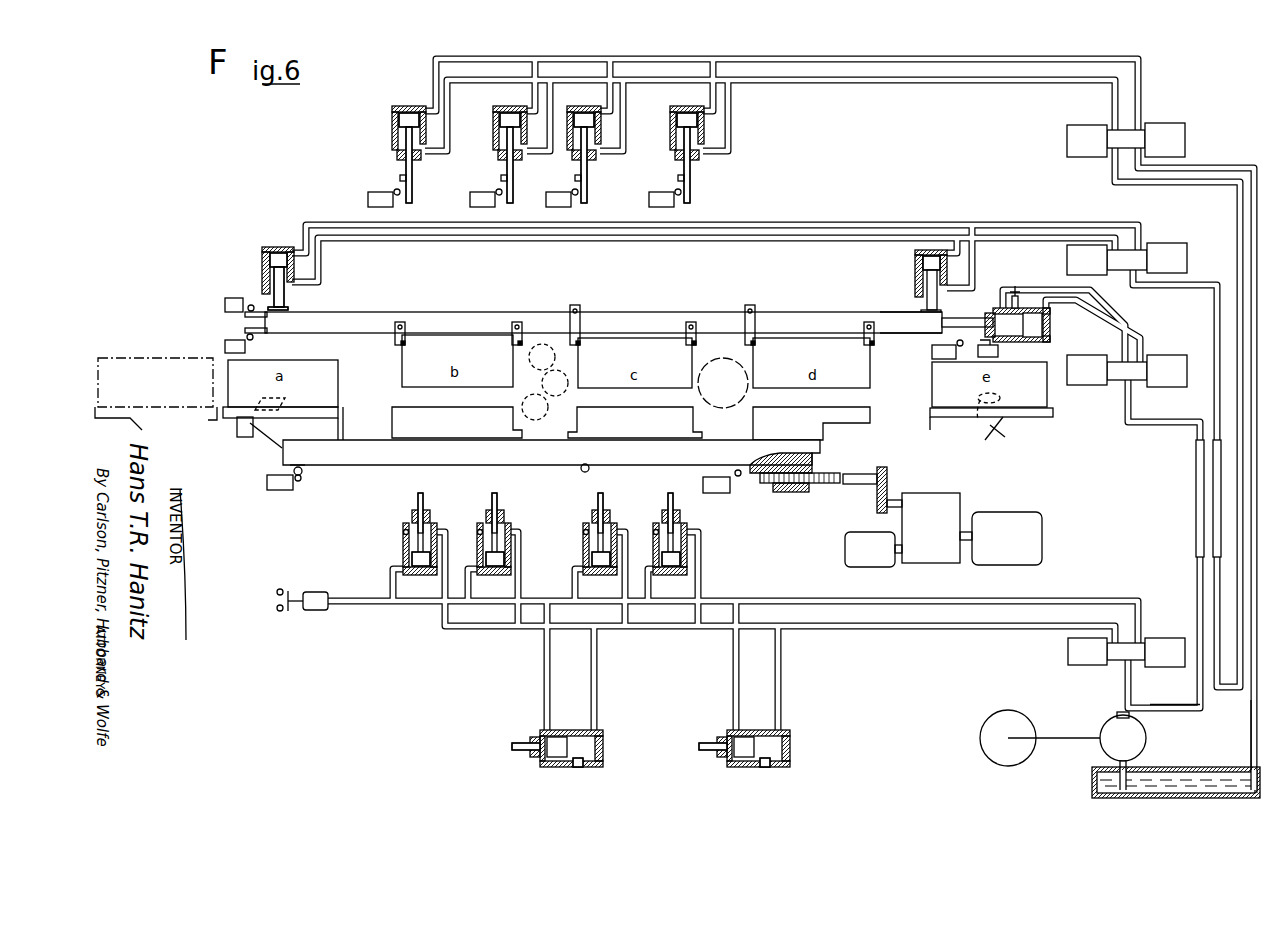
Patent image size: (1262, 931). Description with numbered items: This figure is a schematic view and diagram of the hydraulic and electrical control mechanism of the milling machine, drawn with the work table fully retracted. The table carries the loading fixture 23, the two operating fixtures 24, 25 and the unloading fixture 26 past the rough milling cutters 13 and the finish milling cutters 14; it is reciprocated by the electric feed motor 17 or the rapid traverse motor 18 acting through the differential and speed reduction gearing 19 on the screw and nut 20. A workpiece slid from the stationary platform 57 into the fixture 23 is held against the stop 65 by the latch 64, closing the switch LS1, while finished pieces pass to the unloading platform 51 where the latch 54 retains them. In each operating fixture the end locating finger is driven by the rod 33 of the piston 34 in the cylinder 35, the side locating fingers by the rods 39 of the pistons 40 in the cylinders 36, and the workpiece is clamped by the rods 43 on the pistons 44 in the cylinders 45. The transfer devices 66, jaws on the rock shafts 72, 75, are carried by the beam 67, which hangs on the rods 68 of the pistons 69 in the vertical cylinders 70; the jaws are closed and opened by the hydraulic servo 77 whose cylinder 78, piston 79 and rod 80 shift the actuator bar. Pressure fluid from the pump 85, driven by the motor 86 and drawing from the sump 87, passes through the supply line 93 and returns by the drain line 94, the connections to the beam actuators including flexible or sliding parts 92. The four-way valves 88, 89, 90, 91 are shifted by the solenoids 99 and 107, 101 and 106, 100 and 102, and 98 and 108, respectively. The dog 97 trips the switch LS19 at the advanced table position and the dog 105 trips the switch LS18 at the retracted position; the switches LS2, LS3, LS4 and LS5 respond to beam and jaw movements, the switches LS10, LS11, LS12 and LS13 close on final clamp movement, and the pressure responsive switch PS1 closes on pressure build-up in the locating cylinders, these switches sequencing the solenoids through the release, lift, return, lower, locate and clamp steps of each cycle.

The cutters 13 is at (548, 382).
The cutters 14 is at (748, 395).
The electric feed motor 17 is at (850, 556).
The rapid traverse motor 18 is at (1005, 516).
The differential and speed reduction gearing 19 is at (946, 505).
The screw and nut 20 is at (816, 492).
The loading fixture 23 is at (268, 445).
The operating fixture 24 is at (395, 411).
The operating fixture 25 is at (582, 424).
The unloading fixture 26 is at (828, 428).
The rod 33 is at (524, 744).
The piston 34 is at (556, 738).
The cylinder 35 is at (577, 768).
The cylinders 36 is at (406, 537).
The rods 39 is at (418, 498).
The pistons 40 is at (412, 559).
The rods 43 is at (412, 196).
The pistons 44 is at (400, 120).
The cylinders 45 is at (396, 136).
The unloading platform 51 is at (1003, 432).
The latch 54 is at (1000, 397).
The stationary platform 57 is at (168, 410).
The latch 64 is at (284, 398).
The stop 65 is at (341, 406).
The transfer devices 66 is at (398, 344).
The bar or beam 67 is at (371, 312).
The rods 68 is at (286, 303).
The pistons 69 is at (272, 262).
The cylinders 70 is at (272, 254).
The rock shaft 72 is at (876, 327).
The rock shaft 75 is at (752, 318).
The hydraulic servo 77 is at (1014, 290).
The cylinder 78 is at (1003, 310).
The piston 79 is at (1042, 322).
The rod 80 is at (957, 322).
The pump 85 is at (1112, 728).
The driving motor 86 is at (985, 716).
The fluid sump 87 is at (1092, 778).
The four-way valve 88 is at (1118, 660).
The four-way valve 89 is at (1120, 380).
The four-way valve 90 is at (1133, 262).
The four-way valve 91 is at (1120, 148).
The flexible or sliding parts 92 is at (1214, 498).
The supply line 93 is at (1174, 706).
The drain line 94 is at (1251, 744).
The dog 97 is at (588, 476).
The solenoid 98 is at (1076, 140).
The solenoid 99 is at (1075, 654).
The solenoid 100 is at (1185, 252).
The solenoid 101 is at (1170, 368).
The solenoid 102 is at (1078, 253).
The dog 105 is at (304, 472).
The solenoid 106 is at (1082, 385).
The solenoid 107 is at (1172, 645).
The solenoid 108 is at (1172, 135).
The switch LS1 is at (237, 436).
The switch LS2 is at (232, 298).
The switch LS3 is at (230, 342).
The switch LS4 is at (932, 357).
The switch LS5 is at (998, 352).
The switch LS10 is at (374, 194).
The switch LS11 is at (482, 194).
The switch LS12 is at (558, 194).
The switch LS13 is at (662, 194).
The switch LS18 is at (278, 490).
The switch LS19 is at (738, 493).
The pressure responsive switch PS1 is at (318, 612).